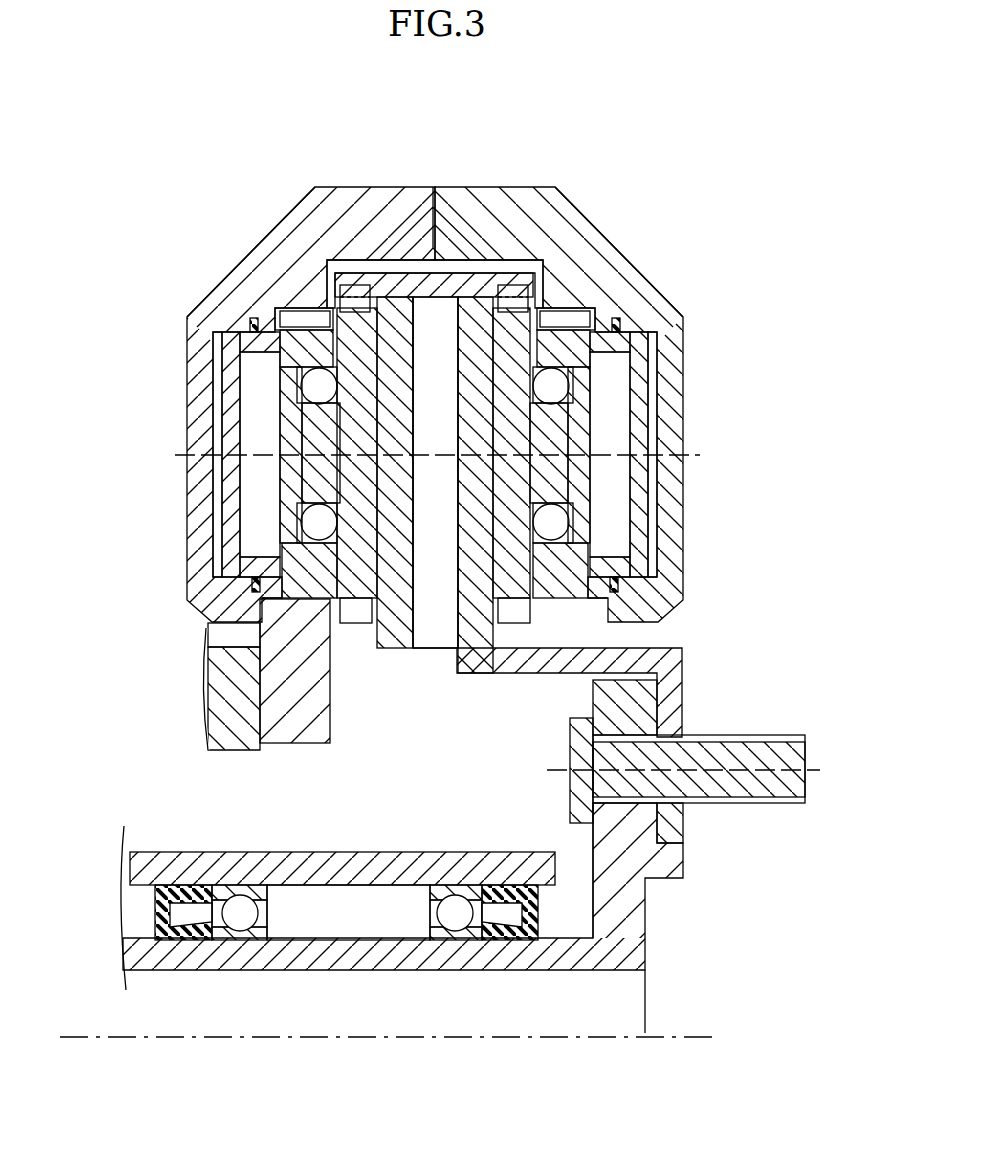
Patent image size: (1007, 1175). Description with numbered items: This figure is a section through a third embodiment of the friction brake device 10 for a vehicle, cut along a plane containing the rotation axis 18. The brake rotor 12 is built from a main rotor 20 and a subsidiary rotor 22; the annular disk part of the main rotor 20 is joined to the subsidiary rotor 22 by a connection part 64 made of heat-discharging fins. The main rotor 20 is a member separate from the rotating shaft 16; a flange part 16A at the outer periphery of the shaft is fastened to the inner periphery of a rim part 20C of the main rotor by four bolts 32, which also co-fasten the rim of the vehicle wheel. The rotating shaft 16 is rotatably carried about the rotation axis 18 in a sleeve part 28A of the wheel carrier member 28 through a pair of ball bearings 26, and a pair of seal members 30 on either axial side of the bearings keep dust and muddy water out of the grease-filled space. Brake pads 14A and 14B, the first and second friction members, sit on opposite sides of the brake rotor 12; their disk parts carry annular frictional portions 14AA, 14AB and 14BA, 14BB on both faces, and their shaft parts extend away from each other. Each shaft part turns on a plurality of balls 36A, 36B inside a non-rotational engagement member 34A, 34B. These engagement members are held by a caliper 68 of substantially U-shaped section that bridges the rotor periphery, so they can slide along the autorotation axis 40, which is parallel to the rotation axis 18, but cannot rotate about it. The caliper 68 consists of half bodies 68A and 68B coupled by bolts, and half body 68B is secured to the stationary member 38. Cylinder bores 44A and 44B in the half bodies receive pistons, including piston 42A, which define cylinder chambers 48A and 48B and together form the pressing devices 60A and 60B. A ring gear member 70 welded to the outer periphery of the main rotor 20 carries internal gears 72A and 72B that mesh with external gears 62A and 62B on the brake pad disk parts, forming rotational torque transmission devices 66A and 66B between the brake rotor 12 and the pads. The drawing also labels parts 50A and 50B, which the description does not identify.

The brake device 10 is at (436, 368).
The brake rotor 12 is at (435, 531).
The brake pad 14A is at (570, 432).
The frictional portion 14AA is at (587, 333).
The frictional portion 14AB is at (592, 352).
The brake pad 14B is at (300, 425).
The frictional portion 14BA is at (335, 333).
The frictional portion 14BB is at (335, 350).
The rotating shaft 16 is at (331, 966).
The flange part 16A is at (650, 905).
The rotation axis 18 is at (700, 1032).
The main rotor 20 is at (694, 654).
The rim part 20C is at (680, 717).
The subsidiary rotor 22 is at (391, 652).
The ball bearings 26 is at (237, 920).
The wheel carrier member 28 is at (170, 849).
The sleeve part 28A is at (348, 912).
The seal members 30 is at (181, 930).
The bolts 32 is at (756, 790).
The non-rotational engagement member 34A is at (585, 463).
The non-rotational engagement member 34B is at (290, 440).
The balls 36A is at (554, 522).
The balls 36B is at (316, 522).
The stationary member 38 is at (233, 735).
The autorotation axis 40 is at (704, 452).
The piston 42A is at (225, 473).
The cylinder bore 44A is at (602, 590).
The cylinder bore 44B is at (253, 585).
The cylinder chamber 48A is at (654, 490).
The cylinder chamber 48B is at (214, 502).
The first cover portion 50A is at (622, 595).
The second cover portion 50B is at (245, 590).
The pressing device 60A is at (643, 330).
The pressing device 60B is at (240, 325).
The external gear 62A is at (511, 612).
The external gear 62B is at (357, 612).
The connection part 64 is at (437, 640).
The rotational torque transmission device 66A is at (544, 300).
The rotational torque transmission device 66B is at (328, 302).
The caliper 68 is at (433, 375).
The half body 68A is at (600, 258).
The half body 68B is at (275, 245).
The ring gear member 70 is at (415, 280).
The internal gear 72A is at (513, 290).
The internal gear 72B is at (352, 290).